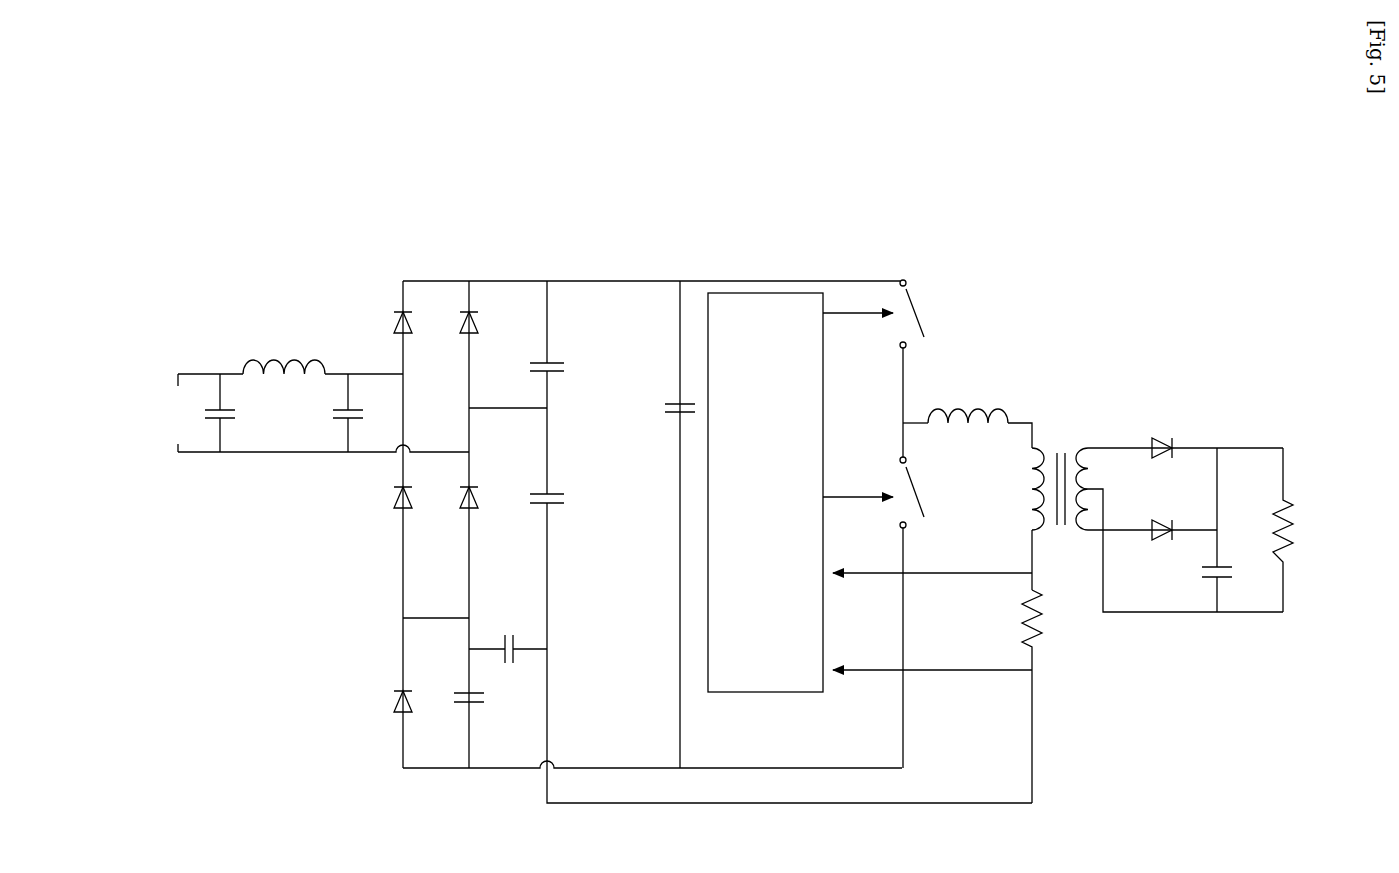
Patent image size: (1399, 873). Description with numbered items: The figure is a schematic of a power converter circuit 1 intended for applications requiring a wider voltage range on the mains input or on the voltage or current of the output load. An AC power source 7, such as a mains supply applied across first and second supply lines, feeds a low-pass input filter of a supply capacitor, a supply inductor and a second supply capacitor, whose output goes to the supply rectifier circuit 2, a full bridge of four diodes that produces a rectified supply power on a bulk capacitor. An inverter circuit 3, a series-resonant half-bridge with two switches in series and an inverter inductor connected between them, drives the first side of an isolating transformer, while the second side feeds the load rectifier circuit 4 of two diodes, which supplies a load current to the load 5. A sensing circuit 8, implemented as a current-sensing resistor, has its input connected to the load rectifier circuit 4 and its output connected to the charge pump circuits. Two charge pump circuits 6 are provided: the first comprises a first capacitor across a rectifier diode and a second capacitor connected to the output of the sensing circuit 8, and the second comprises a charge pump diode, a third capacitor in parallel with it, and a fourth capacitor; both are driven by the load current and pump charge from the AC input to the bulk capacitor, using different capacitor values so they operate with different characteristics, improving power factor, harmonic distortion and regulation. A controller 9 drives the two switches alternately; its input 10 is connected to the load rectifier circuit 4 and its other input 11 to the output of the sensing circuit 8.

The power converter circuit 1 is at (352, 180).
The supply rectifier circuit 2 is at (494, 248).
The inverter circuit 3 is at (962, 348).
The load rectifier circuit 4 is at (1176, 405).
The load 5 is at (1309, 505).
The charge pump circuit 6 is at (562, 424).
The AC power source 7 is at (144, 428).
The sensing circuit 8 is at (1054, 658).
The controller 9 is at (800, 492).
The input of the controller 10 is at (818, 571).
The input of the controller 11 is at (818, 671).